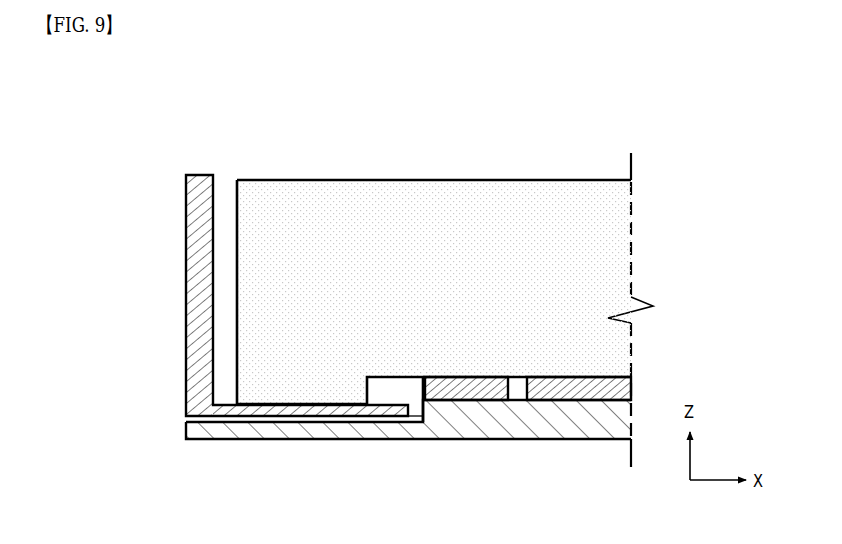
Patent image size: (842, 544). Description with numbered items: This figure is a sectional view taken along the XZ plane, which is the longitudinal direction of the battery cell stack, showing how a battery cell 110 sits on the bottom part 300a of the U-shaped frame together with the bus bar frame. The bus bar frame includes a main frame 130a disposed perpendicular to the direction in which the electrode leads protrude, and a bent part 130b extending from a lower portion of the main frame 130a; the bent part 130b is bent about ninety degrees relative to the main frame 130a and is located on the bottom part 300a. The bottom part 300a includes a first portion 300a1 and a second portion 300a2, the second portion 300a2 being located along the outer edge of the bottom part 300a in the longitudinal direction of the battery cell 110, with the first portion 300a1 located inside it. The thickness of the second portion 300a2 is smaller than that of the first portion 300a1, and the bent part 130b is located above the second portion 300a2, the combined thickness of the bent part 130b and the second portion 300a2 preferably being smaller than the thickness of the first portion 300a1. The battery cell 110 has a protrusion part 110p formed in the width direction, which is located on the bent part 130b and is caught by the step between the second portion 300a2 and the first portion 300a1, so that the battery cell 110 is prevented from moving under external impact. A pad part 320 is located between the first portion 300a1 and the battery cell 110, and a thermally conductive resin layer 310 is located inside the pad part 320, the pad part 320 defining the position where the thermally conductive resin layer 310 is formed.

The battery cell 110 is at (428, 208).
The protrusion part 110p is at (277, 392).
The main frame 130a is at (200, 245).
The bent part 130b is at (374, 411).
The bottom part 300a is at (480, 314).
The first portion 300a1 is at (522, 426).
The second portion 300a2 is at (220, 428).
The thermally conductive resin layer 310 is at (588, 388).
The pad part 320 is at (463, 388).